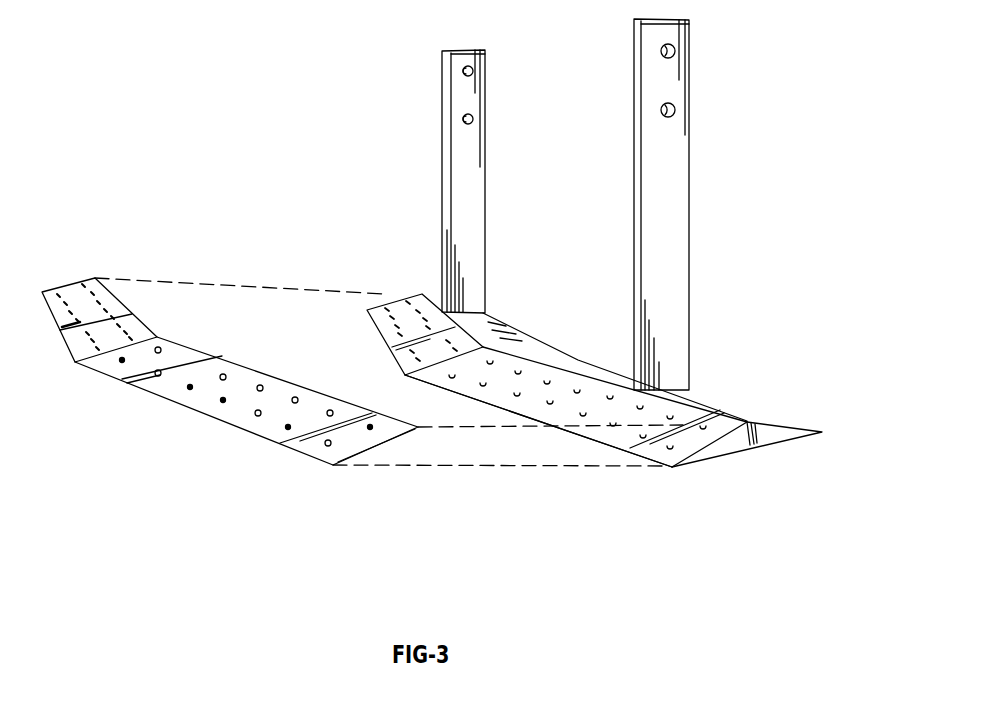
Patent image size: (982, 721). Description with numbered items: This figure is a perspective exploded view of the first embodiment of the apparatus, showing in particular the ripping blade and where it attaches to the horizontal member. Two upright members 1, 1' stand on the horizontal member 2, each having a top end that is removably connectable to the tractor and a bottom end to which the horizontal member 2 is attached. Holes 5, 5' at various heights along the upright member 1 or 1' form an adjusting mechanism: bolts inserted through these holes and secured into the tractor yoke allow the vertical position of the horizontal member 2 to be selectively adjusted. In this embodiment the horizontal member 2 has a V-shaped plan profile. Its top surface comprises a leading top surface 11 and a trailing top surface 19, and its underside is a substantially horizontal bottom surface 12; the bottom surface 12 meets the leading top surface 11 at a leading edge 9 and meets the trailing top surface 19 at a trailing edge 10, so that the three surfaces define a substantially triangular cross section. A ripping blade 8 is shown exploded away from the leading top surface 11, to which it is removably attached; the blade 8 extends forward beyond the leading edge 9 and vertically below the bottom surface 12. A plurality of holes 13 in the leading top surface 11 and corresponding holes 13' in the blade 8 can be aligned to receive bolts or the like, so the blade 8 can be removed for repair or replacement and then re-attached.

The upright member 1 is at (497, 175).
The upright member 1' is at (704, 204).
The horizontal member 2 is at (600, 430).
The hole 5 is at (504, 108).
The hole 5' is at (506, 57).
The ripping blade 8 is at (230, 399).
The leading edge 9 is at (382, 335).
The trailing edge 10 is at (824, 432).
The leading top surface 11 is at (408, 357).
The bottom surface 12 is at (715, 463).
The hole 13 is at (624, 505).
The hole 13' is at (258, 473).
The trailing top surface 19 is at (508, 342).